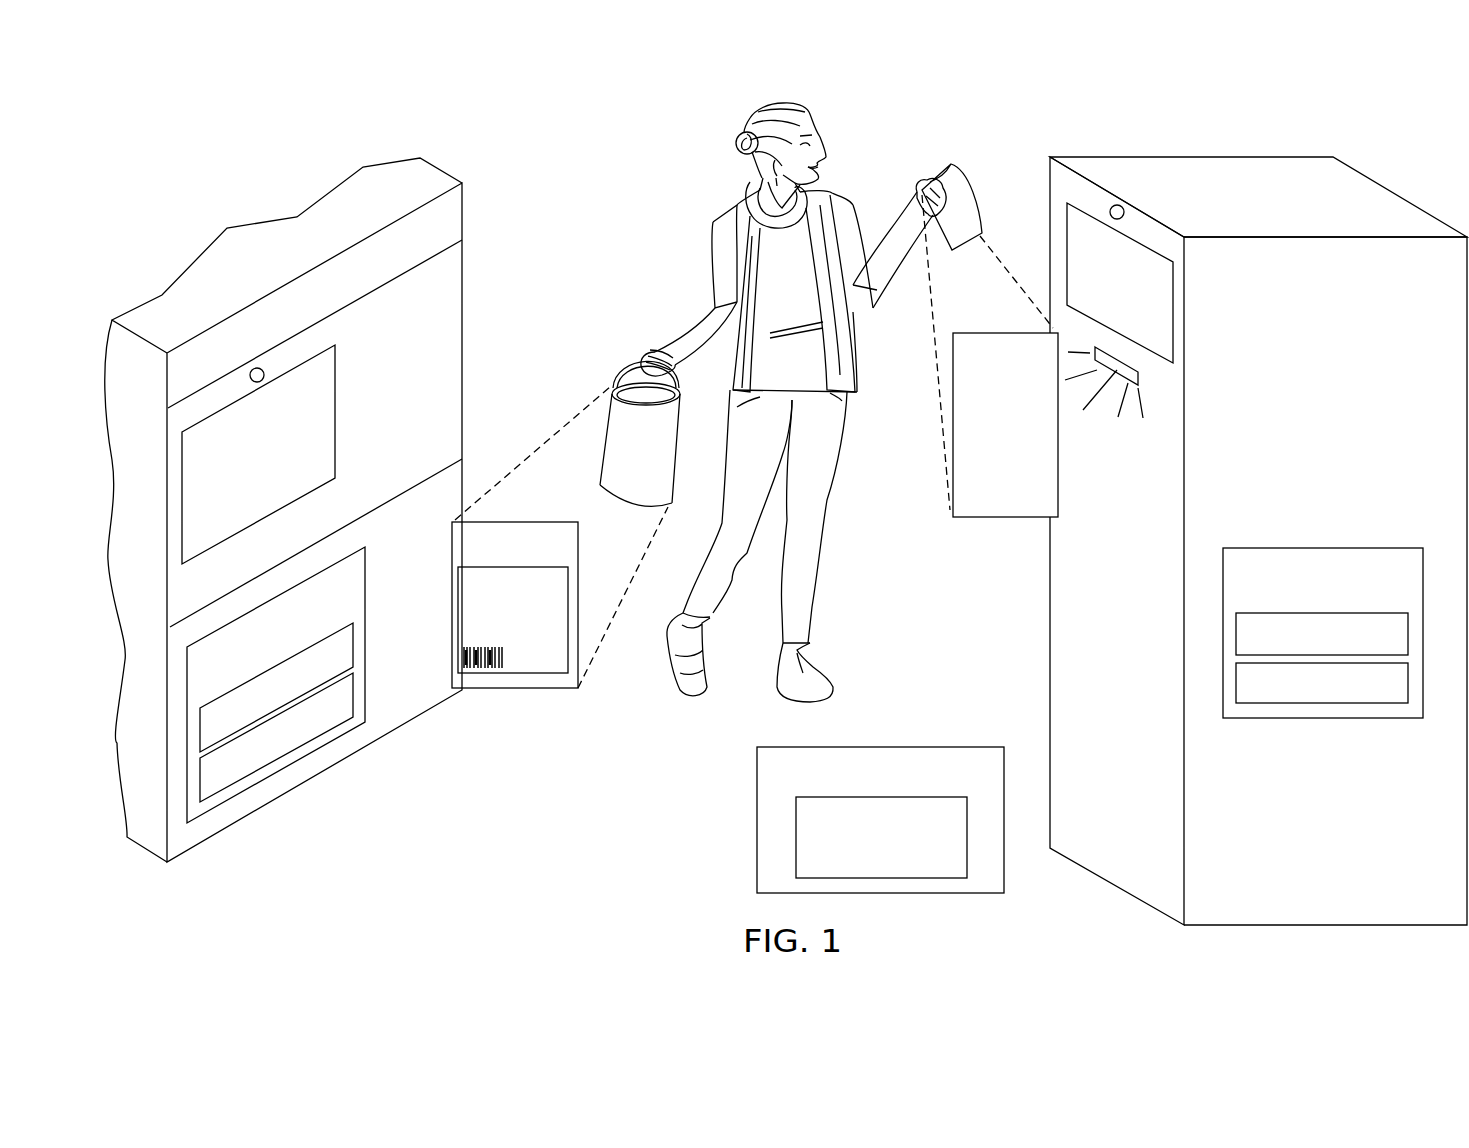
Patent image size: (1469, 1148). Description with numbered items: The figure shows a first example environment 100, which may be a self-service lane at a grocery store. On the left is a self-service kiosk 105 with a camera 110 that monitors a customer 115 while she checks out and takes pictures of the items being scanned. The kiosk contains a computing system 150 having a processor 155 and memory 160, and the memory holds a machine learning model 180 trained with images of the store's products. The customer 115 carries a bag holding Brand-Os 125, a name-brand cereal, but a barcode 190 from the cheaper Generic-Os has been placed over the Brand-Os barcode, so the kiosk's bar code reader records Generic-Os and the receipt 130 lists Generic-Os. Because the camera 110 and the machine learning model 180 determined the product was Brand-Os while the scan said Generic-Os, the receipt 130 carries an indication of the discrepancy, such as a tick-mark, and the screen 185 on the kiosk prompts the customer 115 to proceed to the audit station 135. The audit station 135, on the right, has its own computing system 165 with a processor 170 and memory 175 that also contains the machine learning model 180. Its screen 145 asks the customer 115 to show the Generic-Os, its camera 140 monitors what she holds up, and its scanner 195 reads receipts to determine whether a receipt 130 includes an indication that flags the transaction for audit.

The example environment 100 is at (316, 90).
The self-service kiosk 105 is at (299, 788).
The camera 110 is at (250, 377).
The customer 115 is at (737, 205).
The Brand-Os 125 is at (533, 567).
The receipt 130 is at (963, 227).
The audit station 135 is at (1097, 652).
The camera 140 is at (1110, 210).
The screen 145 is at (1153, 250).
The computing system 150 is at (276, 685).
The processor 155 is at (276, 687).
The memory 160 is at (276, 737).
The computing system 165 is at (1323, 633).
The processor 170 is at (1322, 634).
The memory 175 is at (1322, 683).
The machine learning model 180 is at (880, 820).
The screen 185 is at (340, 387).
The barcode 190 is at (472, 673).
The scanner 195 is at (1120, 377).